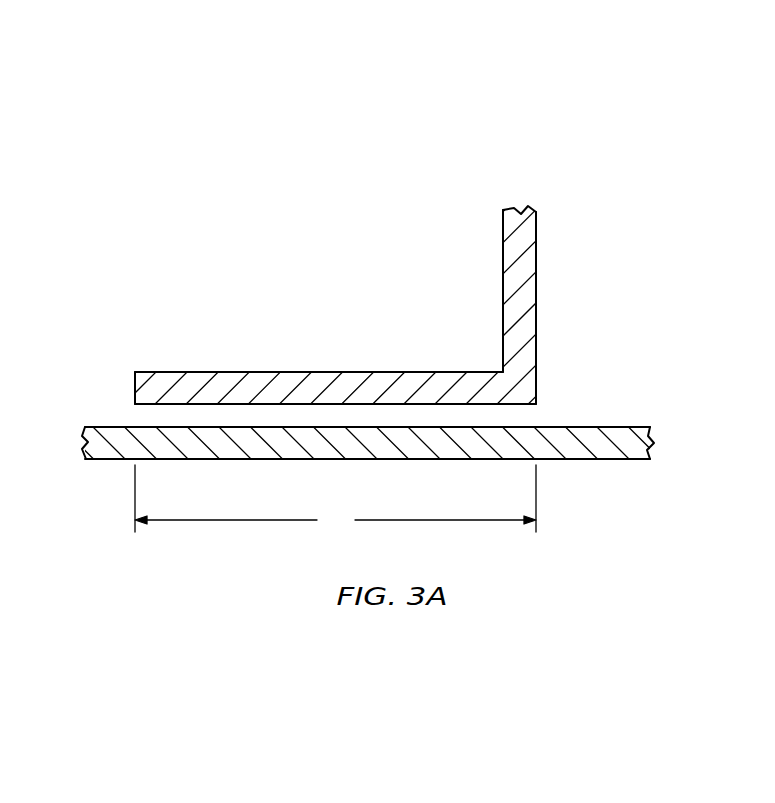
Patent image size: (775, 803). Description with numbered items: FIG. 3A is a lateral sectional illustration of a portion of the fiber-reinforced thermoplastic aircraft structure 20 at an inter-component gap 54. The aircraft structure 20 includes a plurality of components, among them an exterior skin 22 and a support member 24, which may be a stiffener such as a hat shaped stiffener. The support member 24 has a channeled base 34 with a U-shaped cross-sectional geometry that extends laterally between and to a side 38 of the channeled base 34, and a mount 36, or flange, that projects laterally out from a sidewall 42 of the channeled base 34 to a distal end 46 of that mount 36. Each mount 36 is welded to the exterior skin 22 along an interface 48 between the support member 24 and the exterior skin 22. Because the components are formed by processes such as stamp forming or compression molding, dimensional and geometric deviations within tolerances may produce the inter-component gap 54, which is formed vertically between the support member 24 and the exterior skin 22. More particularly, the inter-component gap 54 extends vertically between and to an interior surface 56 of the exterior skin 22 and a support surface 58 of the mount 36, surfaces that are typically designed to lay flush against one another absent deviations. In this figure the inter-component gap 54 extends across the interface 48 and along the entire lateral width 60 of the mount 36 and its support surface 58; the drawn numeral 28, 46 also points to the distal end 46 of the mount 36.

The aircraft structure 20 is at (571, 100).
The exterior skin 22 is at (686, 446).
The support member 24 is at (551, 206).
The flange end 28 is at (73, 384).
The distal end 46 is at (135, 385).
The channeled base 34 is at (495, 228).
The mount 36 is at (317, 352).
The side of the channeled base 38 is at (503, 283).
The sidewall 42 is at (528, 268).
The interface 48 is at (400, 401).
The inter-component gap 54 is at (540, 413).
The interior surface 56 is at (253, 427).
The support surface 58 is at (208, 404).
The lateral width 60 is at (335, 500).